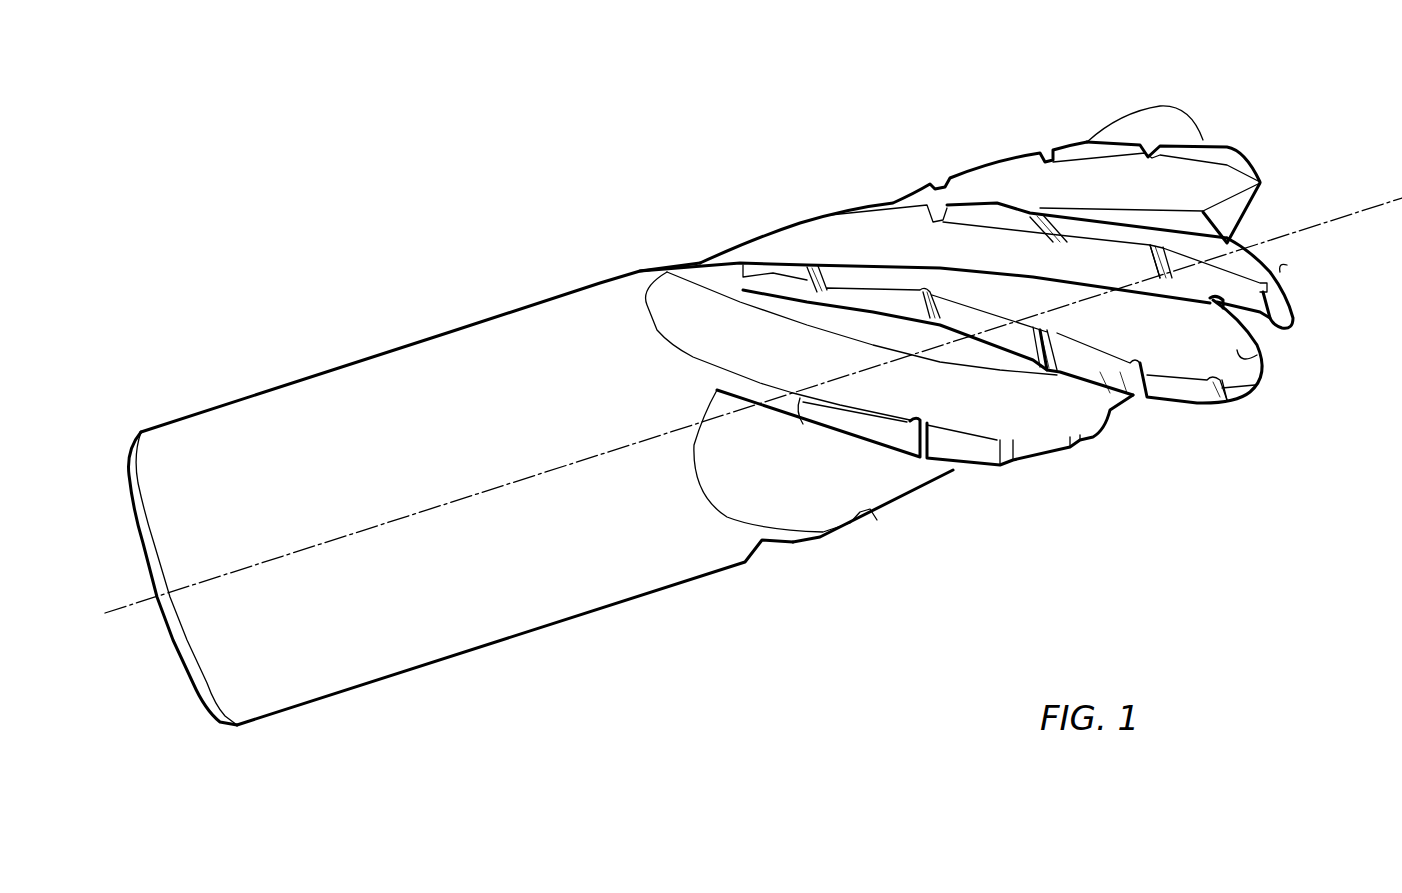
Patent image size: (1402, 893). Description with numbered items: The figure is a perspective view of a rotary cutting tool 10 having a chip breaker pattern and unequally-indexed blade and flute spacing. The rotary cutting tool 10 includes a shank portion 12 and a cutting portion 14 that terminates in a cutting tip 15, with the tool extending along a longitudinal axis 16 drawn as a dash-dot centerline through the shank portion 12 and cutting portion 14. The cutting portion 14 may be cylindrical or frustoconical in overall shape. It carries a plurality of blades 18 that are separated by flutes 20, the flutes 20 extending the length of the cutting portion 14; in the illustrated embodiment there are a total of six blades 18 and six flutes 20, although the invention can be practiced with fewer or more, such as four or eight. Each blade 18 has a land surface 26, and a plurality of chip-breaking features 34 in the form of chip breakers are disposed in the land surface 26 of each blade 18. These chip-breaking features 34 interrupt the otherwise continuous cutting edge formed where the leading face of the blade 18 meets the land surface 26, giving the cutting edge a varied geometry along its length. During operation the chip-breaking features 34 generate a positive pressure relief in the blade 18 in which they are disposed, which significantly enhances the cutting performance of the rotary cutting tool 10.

The rotary cutting tool 10 is at (314, 166).
The shank portion 12 is at (232, 368).
The cutting portion 14 is at (873, 190).
The cutting tip 15 is at (1287, 265).
The longitudinal axis 16 is at (115, 613).
The blade 18 is at (1207, 151).
The flute 20 is at (1262, 183).
The land surface 26 is at (1003, 213).
The chip-breaking feature 34 is at (818, 278).